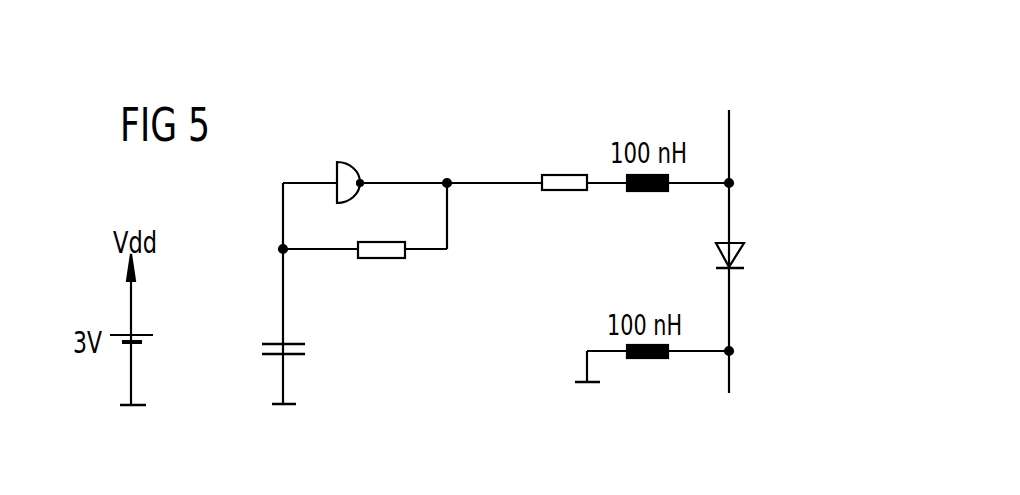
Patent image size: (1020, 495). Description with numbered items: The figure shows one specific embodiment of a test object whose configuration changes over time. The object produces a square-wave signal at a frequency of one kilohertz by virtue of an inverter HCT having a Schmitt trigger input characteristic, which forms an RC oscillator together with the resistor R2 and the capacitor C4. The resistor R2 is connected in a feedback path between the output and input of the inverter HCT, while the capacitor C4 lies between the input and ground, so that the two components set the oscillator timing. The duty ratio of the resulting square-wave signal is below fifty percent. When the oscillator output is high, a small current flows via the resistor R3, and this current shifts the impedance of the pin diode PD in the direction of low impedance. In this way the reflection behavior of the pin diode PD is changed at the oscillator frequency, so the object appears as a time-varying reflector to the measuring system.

The inverter HCT is at (355, 163).
The resistor R2 is at (388, 258).
The resistor R3 is at (562, 190).
The capacitor C4 is at (273, 341).
The pin diode PD is at (740, 253).